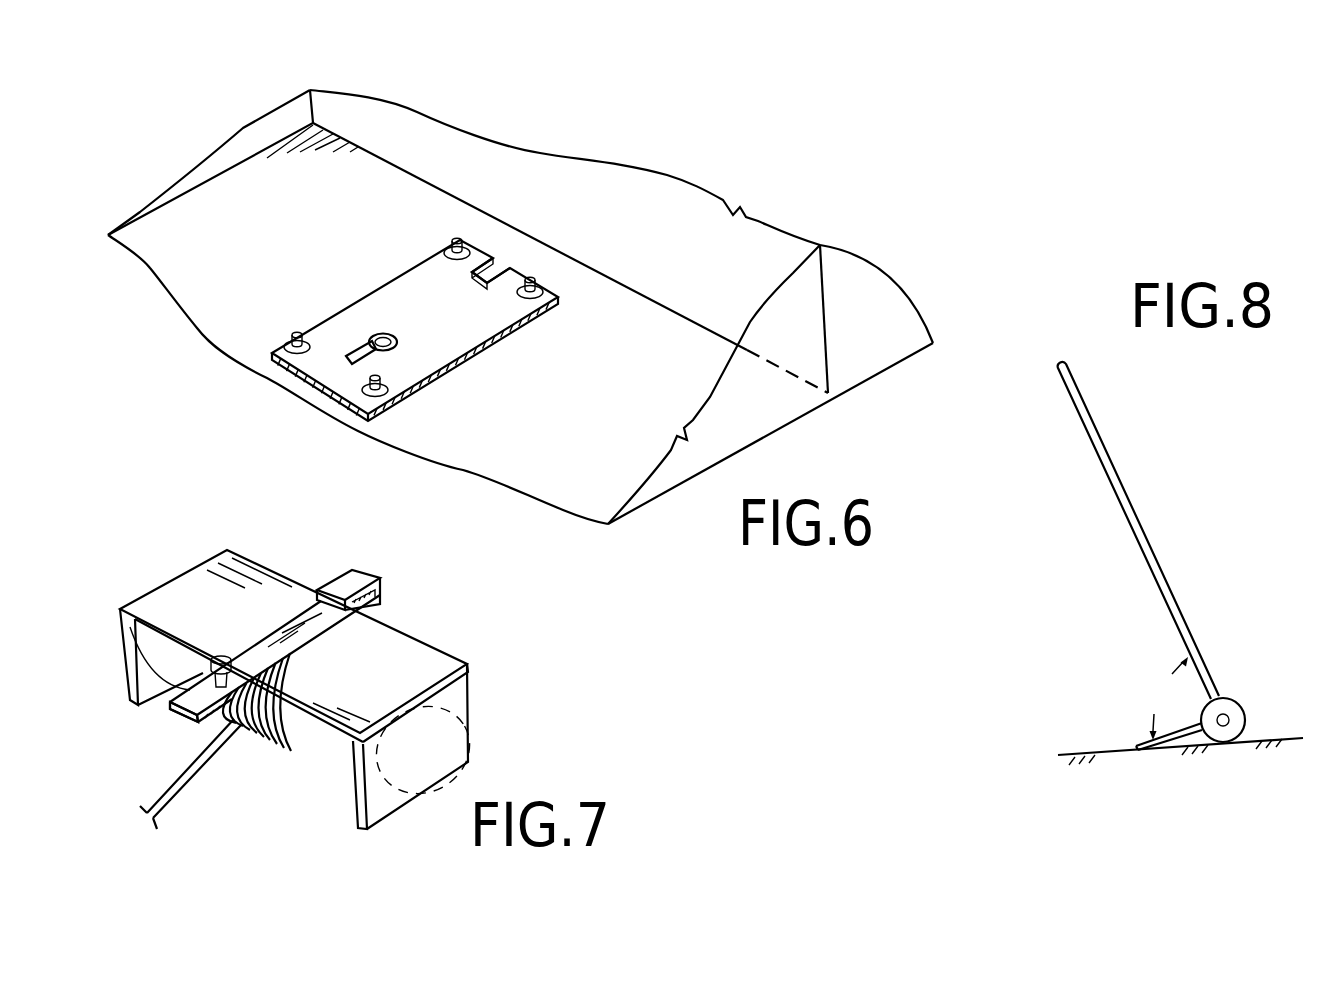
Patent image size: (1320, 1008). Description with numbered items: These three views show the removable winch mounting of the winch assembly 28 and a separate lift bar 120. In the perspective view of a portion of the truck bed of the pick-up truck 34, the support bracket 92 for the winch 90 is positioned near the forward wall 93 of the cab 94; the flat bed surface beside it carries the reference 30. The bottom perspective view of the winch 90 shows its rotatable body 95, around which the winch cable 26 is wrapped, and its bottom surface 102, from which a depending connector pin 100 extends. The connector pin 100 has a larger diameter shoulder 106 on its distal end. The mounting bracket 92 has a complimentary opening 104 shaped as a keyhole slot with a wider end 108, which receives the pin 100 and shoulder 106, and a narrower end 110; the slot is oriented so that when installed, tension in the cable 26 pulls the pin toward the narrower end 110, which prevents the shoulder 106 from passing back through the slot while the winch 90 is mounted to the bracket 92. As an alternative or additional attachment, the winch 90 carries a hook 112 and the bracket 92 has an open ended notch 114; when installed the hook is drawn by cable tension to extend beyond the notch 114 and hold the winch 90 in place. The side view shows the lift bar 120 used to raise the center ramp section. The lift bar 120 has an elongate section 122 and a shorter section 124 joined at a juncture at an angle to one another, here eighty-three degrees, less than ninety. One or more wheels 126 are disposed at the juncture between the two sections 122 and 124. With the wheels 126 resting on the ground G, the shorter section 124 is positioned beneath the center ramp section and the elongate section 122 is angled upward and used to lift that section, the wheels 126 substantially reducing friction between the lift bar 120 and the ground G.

In FIG. 6, the floor panel 30 is at (265, 268).
In FIG. 6, the pick-up truck 34 is at (792, 194).
In FIG. 6, the support bracket 92 is at (455, 332).
In FIG. 6, the forward wall 93 is at (698, 271).
In FIG. 6, the cab 94 is at (890, 262).
In FIG. 6, the openings 104 is at (383, 357).
In FIG. 6, the wider end 108 is at (378, 333).
In FIG. 6, the narrower end 110 is at (357, 368).
In FIG. 6, the open ended notches 114 is at (505, 267).
In FIG. 7, the winch cable 26 is at (180, 782).
In FIG. 7, the winch assembly 28 is at (317, 678).
In FIG. 7, the winch 90 is at (323, 790).
In FIG. 7, the rotatable body 95 is at (430, 761).
In FIG. 7, the connector pins 100 is at (190, 713).
In FIG. 7, the bottom surface 102 is at (397, 660).
In FIG. 7, the shoulder 106 is at (220, 656).
In FIG. 7, the hooks 112 is at (349, 574).
In FIG. 8, the lift bar 120 is at (1164, 588).
In FIG. 8, the elongate section 122 is at (1150, 543).
In FIG. 8, the shorter section 124 is at (1148, 753).
In FIG. 8, the wheels 126 is at (1238, 717).
In FIG. 8, the ground G is at (1077, 752).